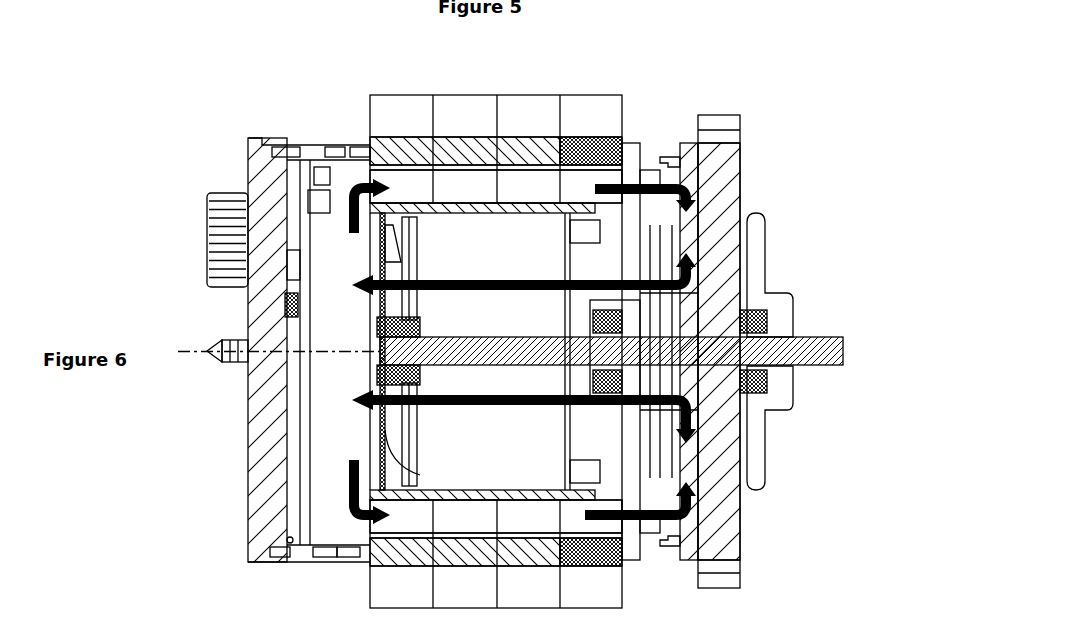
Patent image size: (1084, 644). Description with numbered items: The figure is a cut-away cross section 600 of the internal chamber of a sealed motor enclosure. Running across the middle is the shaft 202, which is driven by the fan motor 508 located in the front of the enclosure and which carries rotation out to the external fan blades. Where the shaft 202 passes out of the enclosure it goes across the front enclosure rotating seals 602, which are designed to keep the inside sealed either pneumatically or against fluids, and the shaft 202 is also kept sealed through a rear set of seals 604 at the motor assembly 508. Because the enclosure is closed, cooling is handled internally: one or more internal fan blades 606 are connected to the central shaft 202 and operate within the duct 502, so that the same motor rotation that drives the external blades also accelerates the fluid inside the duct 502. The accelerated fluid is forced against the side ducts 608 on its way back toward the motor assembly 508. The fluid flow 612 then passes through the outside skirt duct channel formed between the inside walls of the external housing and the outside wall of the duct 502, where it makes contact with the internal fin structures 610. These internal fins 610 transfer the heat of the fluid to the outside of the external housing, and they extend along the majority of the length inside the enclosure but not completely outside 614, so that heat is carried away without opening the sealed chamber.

The cross section 600 is at (845, 59).
The outside 614 is at (384, 96).
The fluid flow 612 is at (339, 181).
The internal fin structures 610 is at (534, 184).
The duct 502 is at (566, 195).
The internal fan blade 606 is at (381, 254).
The side ducts 608 is at (395, 505).
The fan motor 508 is at (630, 314).
The rear set of seals 604 is at (634, 317).
The front enclosure rotating seals 602 is at (771, 317).
The shaft 202 is at (852, 339).